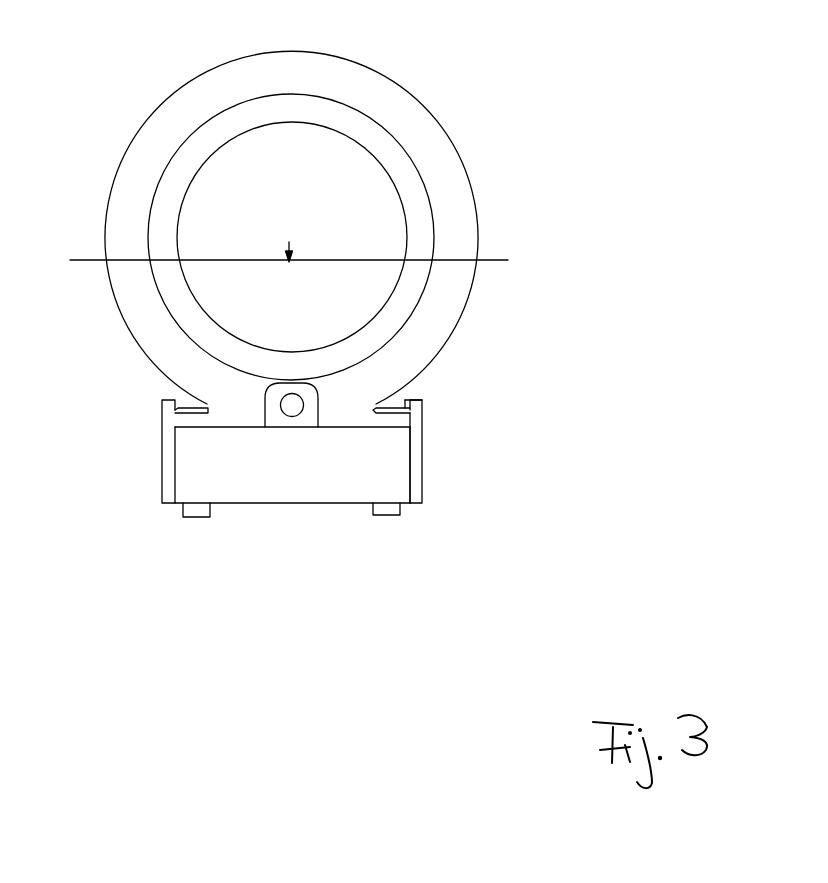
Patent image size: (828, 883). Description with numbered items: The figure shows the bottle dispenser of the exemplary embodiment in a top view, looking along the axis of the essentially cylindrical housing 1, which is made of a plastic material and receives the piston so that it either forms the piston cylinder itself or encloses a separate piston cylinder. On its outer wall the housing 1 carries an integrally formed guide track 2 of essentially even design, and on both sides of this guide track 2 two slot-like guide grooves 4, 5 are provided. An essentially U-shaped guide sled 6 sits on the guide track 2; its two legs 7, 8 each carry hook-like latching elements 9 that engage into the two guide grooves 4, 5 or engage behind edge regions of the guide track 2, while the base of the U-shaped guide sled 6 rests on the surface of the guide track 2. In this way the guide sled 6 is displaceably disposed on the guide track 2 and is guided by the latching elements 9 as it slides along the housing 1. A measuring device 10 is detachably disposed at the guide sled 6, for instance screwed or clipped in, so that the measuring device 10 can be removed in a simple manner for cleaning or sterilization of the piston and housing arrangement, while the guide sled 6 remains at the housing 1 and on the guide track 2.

The housing 1 is at (430, 337).
The guide track 2 is at (240, 415).
The guide groove 4 is at (375, 408).
The guide groove 5 is at (203, 408).
The guide sled 6 is at (418, 418).
The leg 7 is at (418, 407).
The leg 8 is at (172, 421).
The latching element 9 is at (415, 405).
The measuring device 10 is at (280, 530).